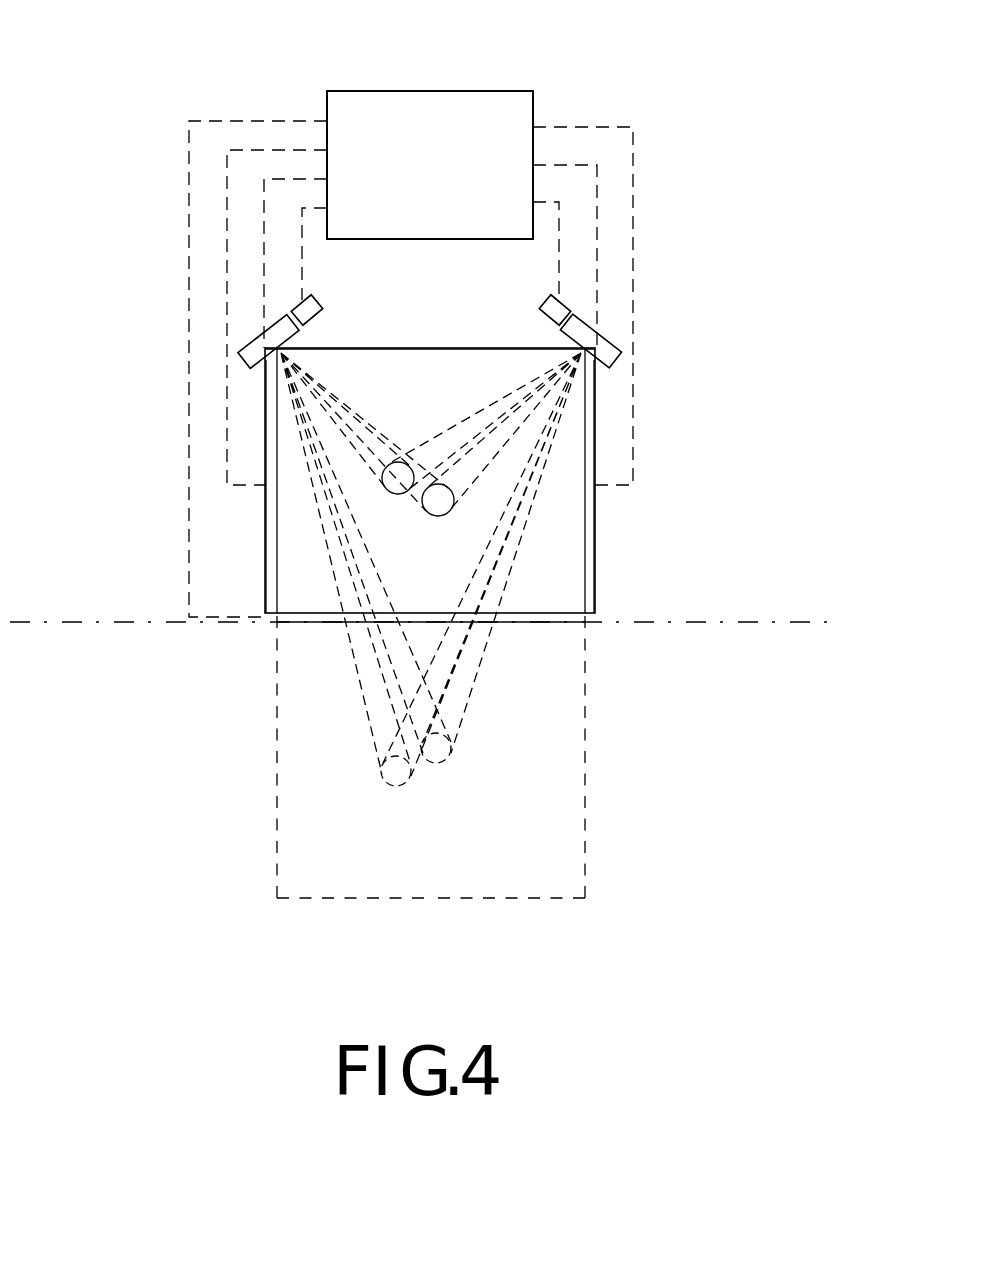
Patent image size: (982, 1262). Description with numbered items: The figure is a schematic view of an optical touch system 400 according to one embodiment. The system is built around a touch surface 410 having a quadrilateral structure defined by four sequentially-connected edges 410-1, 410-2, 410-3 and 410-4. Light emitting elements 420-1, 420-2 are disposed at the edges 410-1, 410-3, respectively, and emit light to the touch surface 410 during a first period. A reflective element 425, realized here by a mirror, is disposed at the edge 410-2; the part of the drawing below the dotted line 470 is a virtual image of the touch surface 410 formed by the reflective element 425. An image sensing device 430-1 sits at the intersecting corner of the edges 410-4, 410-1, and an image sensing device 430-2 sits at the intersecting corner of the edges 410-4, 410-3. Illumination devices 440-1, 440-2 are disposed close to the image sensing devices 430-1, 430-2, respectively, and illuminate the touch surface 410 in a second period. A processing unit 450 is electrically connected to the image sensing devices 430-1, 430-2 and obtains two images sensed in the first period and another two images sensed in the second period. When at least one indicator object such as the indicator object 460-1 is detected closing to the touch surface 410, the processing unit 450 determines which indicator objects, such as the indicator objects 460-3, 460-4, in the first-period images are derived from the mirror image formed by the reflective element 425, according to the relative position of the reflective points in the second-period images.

The optical touch system 400 is at (815, 722).
The touch surface 410 is at (567, 587).
The edge 410-1 is at (270, 412).
The edge 410-2 is at (295, 610).
The edge 410-3 is at (586, 437).
The edge 410-4 is at (433, 347).
The light emitting element 420-1 is at (268, 460).
The light emitting element 420-2 is at (588, 527).
The reflective element 425 is at (547, 622).
The image sensing device 430-1 is at (248, 362).
The image sensing device 430-2 is at (610, 347).
The illumination device 440-1 is at (301, 310).
The illumination device 440-2 is at (561, 310).
The processing unit 450 is at (430, 90).
The indicator object 460-1 is at (384, 483).
The indicator object 460-3 is at (383, 778).
The indicator object 460-4 is at (431, 764).
The dotted line 470 is at (828, 620).